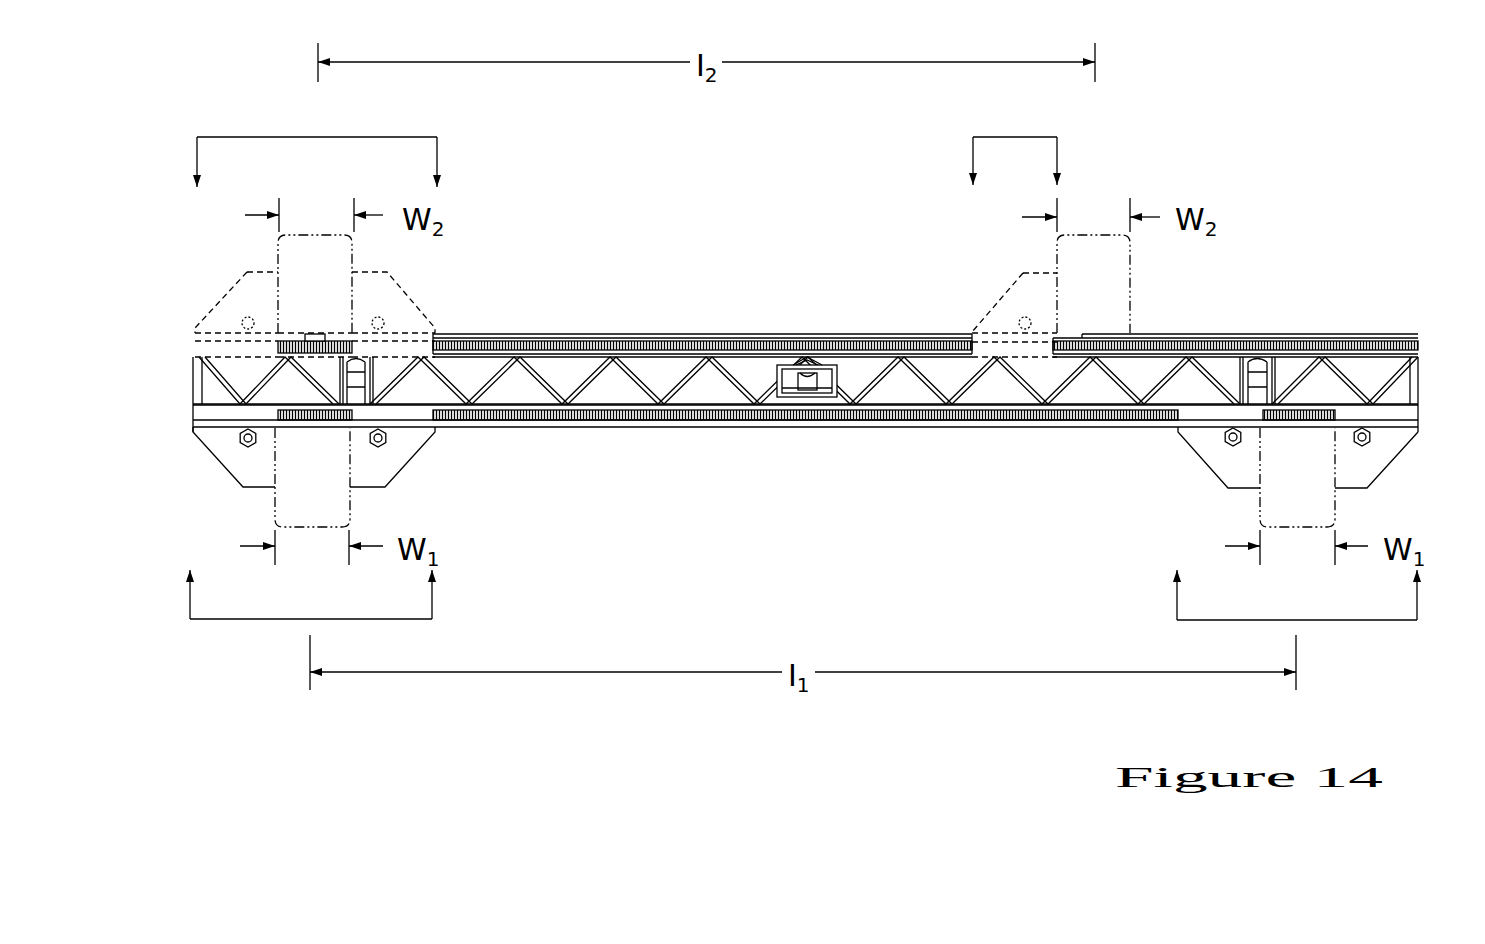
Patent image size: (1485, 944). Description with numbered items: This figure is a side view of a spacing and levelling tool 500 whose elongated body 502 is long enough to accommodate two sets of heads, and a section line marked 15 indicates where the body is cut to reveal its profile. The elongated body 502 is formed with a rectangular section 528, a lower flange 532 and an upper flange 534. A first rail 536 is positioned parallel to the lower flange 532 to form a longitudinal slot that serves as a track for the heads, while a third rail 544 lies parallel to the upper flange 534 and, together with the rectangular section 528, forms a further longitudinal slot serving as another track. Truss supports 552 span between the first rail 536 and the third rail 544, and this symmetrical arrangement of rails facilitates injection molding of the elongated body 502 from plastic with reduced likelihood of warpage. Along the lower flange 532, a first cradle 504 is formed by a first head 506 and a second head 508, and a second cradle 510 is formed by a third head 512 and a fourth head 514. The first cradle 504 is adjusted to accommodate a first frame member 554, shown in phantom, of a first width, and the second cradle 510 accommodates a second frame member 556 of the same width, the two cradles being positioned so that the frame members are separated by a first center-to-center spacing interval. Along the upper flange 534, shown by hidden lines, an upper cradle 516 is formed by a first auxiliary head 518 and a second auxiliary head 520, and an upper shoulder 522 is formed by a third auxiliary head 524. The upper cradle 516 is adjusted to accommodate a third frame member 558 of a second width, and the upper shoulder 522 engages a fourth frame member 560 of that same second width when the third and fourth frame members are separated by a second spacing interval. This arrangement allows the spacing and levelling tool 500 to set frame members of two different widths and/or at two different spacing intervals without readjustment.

The spacing and levelling tool 500 is at (1273, 140).
The elongated body 502 is at (848, 333).
The first cradle 504 is at (267, 619).
The first head 506 is at (238, 467).
The second head 508 is at (380, 470).
The second cradle 510 is at (1347, 622).
The third head 512 is at (1210, 452).
The fourth head 514 is at (1373, 462).
The upper cradle 516 is at (312, 137).
The first auxiliary head 518 is at (247, 290).
The second auxiliary head 520 is at (390, 288).
The upper shoulder 522 is at (985, 137).
The third auxiliary head 524 is at (1025, 295).
The rectangular section 528 is at (1152, 370).
The lower flange 532 is at (777, 427).
The upper flange 534 is at (590, 334).
The first rail 536 is at (905, 408).
The third rail 544 is at (722, 355).
The truss supports 552 is at (663, 393).
The first frame member 554 is at (332, 505).
The second frame member 556 is at (1270, 493).
The third frame member 558 is at (313, 262).
The fourth frame member 560 is at (1122, 283).
The section line 15- 15 is at (503, 470).